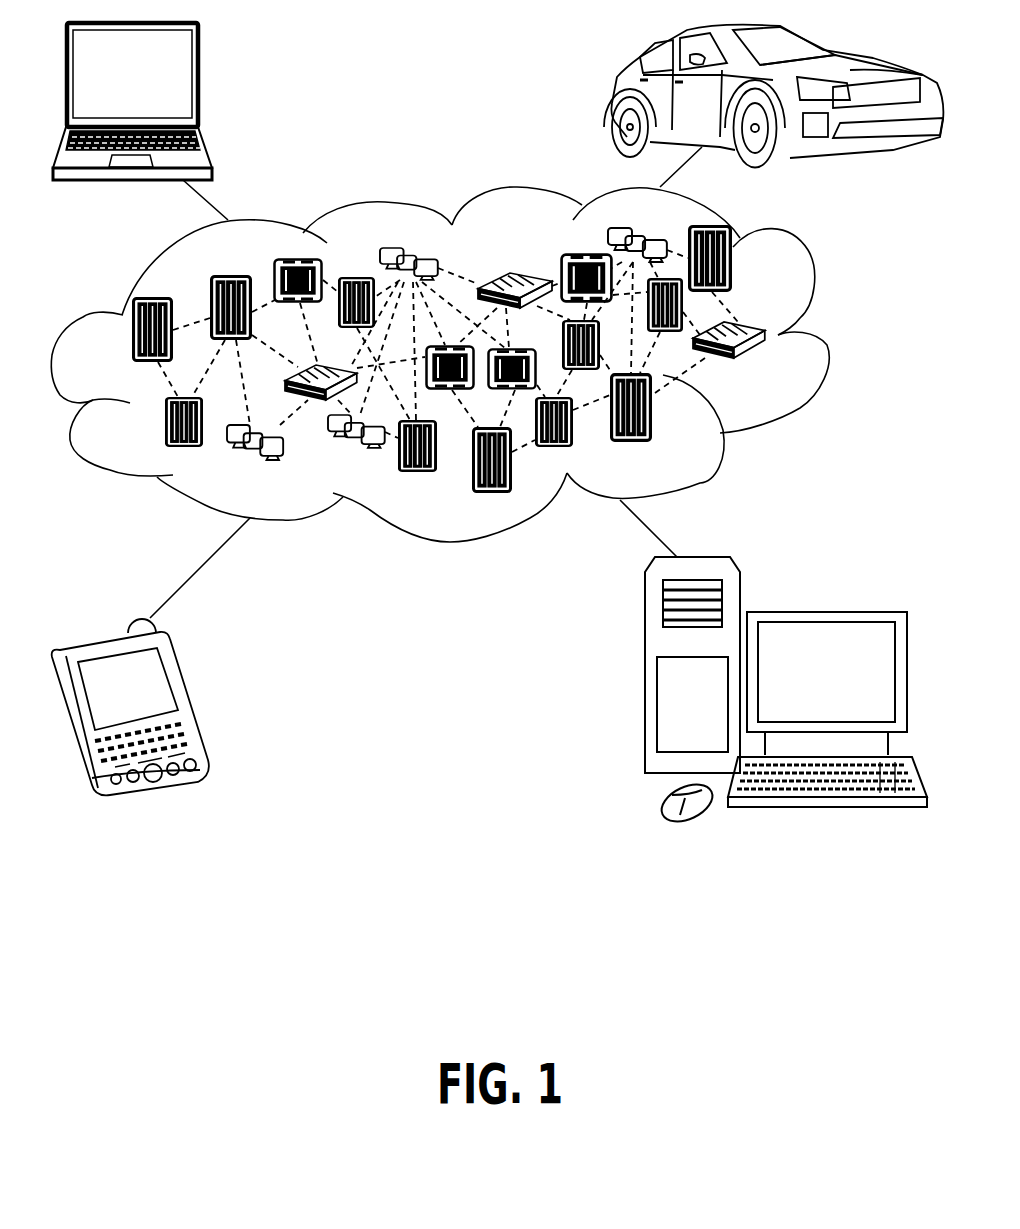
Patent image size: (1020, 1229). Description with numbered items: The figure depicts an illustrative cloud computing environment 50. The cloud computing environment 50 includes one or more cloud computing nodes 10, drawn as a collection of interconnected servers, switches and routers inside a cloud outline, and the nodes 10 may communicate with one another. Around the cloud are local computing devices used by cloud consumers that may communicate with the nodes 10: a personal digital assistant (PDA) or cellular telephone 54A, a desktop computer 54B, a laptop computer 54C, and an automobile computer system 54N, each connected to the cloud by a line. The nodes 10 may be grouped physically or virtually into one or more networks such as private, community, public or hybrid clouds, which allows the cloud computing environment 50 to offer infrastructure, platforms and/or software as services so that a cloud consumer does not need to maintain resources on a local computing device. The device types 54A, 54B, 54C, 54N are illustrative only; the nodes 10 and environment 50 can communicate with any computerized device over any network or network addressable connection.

The cloud computing node 10 is at (772, 369).
The cloud computing environment 50 is at (824, 343).
The personal digital assistant or cellular telephone 54A is at (188, 702).
The desktop computer 54B is at (823, 612).
The laptop computer 54C is at (200, 82).
The automobile computer system 54N is at (613, 98).